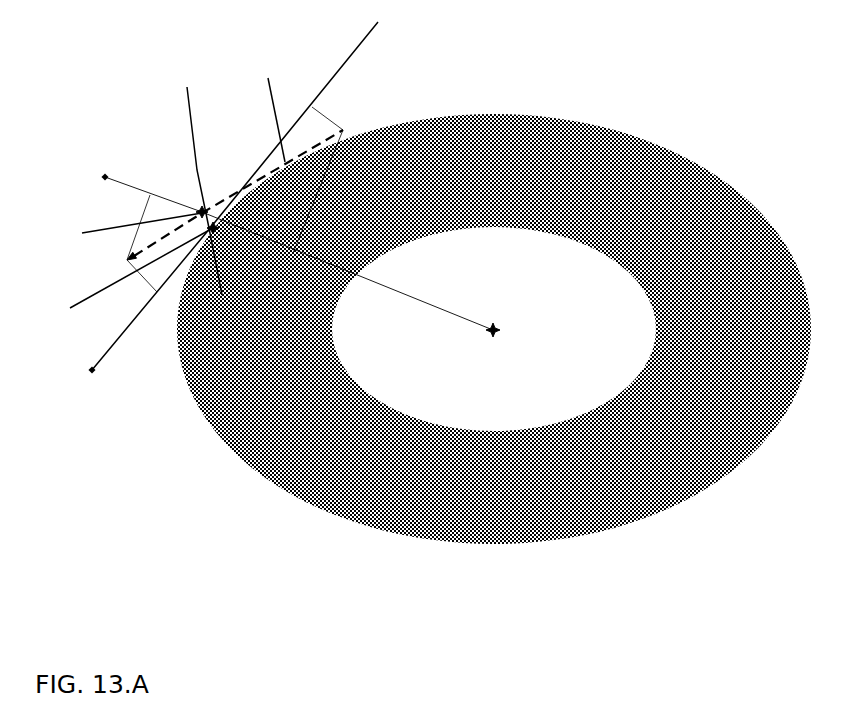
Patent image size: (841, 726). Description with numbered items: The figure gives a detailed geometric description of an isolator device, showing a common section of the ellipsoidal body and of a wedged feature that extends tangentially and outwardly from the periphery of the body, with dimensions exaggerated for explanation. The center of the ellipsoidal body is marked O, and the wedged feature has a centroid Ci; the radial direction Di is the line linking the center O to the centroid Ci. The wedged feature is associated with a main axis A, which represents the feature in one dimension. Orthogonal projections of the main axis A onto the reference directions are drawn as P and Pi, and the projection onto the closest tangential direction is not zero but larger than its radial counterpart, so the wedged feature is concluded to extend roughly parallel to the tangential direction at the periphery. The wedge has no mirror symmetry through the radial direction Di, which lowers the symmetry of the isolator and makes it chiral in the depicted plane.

The radial direction Di is at (290, 209).
The centroid of the wedged feature Ci is at (187, 186).
The main axis A is at (263, 116).
The orthogonal projection of the main axis Pi is at (125, 264).
The orthogonal projection of the main axis P is at (262, 291).
The center of the ellipsoidal body O is at (501, 325).